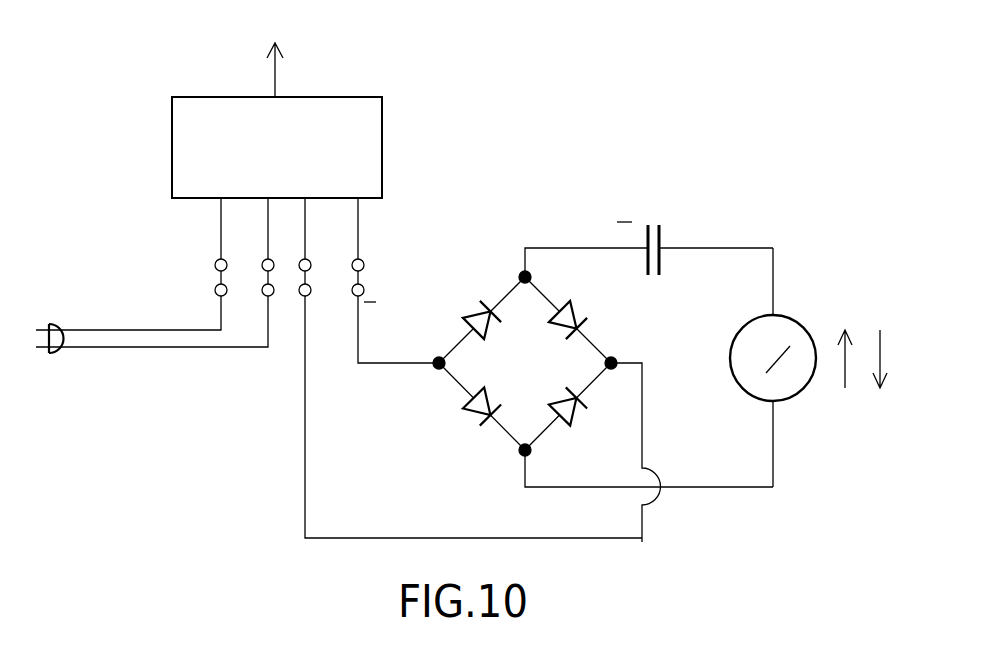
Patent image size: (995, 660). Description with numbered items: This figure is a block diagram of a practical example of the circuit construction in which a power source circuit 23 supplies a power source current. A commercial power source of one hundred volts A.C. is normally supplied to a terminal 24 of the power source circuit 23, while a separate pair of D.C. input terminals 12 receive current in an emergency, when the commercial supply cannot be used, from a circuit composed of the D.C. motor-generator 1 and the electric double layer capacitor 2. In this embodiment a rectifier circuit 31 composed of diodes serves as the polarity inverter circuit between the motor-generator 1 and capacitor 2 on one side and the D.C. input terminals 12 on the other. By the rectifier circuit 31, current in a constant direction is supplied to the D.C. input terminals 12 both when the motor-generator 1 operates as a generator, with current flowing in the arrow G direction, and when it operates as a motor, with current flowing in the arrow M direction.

The D.C. motor-generator 1 is at (812, 338).
The electric double layer capacitor 2 is at (653, 225).
The DC terminals 12 is at (308, 266).
The power source circuit 23 is at (384, 107).
The terminal 24 is at (237, 241).
The rectifier circuit 31 is at (534, 282).